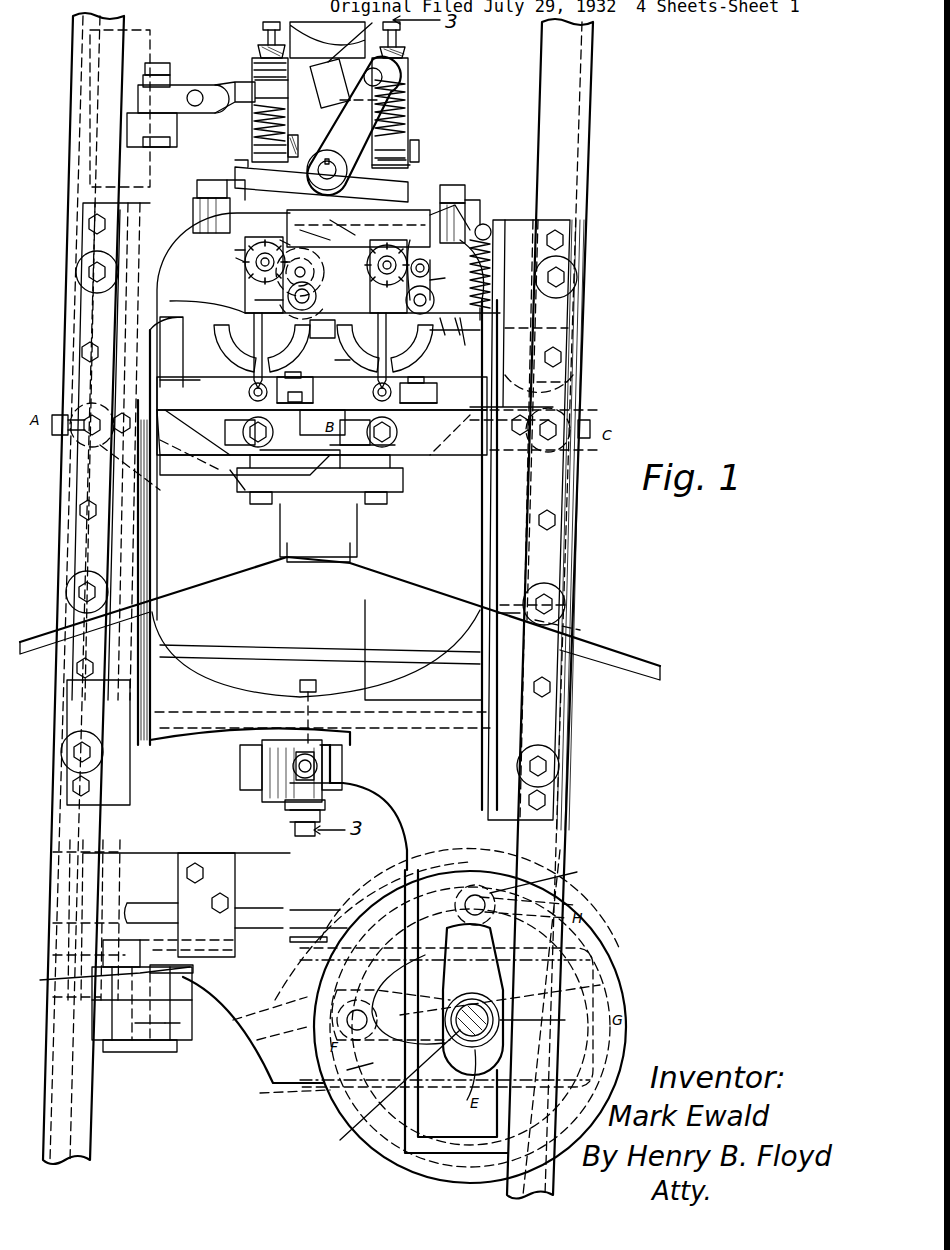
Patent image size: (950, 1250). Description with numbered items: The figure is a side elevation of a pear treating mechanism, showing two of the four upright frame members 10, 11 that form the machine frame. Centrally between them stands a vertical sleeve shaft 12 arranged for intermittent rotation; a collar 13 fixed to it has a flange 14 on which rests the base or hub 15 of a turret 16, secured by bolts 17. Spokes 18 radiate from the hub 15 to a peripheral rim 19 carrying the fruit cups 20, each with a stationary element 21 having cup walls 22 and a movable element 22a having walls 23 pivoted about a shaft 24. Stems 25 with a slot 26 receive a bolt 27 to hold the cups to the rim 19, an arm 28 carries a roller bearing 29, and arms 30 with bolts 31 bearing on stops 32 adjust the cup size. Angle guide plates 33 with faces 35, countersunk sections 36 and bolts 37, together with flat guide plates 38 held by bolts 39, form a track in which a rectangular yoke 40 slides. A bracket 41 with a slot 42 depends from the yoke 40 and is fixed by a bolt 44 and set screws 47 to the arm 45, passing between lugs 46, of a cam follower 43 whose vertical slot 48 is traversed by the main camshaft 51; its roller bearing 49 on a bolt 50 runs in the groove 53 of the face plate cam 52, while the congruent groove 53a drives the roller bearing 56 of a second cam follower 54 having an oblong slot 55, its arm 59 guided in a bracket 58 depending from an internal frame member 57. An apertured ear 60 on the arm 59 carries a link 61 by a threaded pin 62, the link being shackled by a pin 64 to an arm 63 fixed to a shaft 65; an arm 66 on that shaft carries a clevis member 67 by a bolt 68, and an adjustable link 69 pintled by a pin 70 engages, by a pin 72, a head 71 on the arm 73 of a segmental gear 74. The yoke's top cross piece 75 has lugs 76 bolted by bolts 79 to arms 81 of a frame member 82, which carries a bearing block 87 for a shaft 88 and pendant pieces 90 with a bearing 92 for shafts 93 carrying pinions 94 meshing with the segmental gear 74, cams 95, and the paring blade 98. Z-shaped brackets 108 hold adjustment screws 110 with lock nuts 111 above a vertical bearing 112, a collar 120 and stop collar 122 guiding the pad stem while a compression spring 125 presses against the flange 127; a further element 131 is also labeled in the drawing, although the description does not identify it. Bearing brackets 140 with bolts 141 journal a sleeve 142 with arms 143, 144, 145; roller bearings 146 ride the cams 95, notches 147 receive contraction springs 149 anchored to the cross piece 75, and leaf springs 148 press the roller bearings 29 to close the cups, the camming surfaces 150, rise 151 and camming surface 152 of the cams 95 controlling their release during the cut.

The upright frame member 10 is at (73, 310).
The upright frame member 11 is at (578, 330).
The vertical sleeve shaft 12 is at (350, 555).
The collar 13 is at (357, 535).
The flange 14 is at (400, 490).
The base or hub 15 is at (395, 478).
The turret 16 is at (415, 465).
The bolts 17 is at (390, 498).
The spokes 18 is at (232, 475).
The peripheral rim 19 is at (205, 455).
The fruit cup 20 is at (225, 350).
The stationary element 21 is at (250, 372).
The cup walls 22 is at (215, 335).
The movable element 22a is at (329, 365).
The walls 23 is at (328, 340).
The shaft 24 is at (245, 390).
The stems 25 is at (90, 460).
The slot 26 is at (138, 470).
The bolt 27 is at (75, 450).
The arm 28 is at (252, 408).
The roller bearing 29 is at (245, 428).
The arms 30 is at (305, 395).
The bolts 31 is at (375, 382).
The stops 32 is at (305, 405).
The angle guide plates 33 is at (560, 221).
The faces 35 is at (555, 551).
The countersunk sections 36 is at (558, 580).
The bolts 37 is at (560, 600).
The flat guide plates 38 is at (72, 526).
The bolts 39 is at (80, 511).
The yoke 40 is at (482, 555).
The bracket 41 is at (350, 720).
The slot 42 is at (290, 752).
The cam follower 43 is at (430, 848).
The bolt 44 is at (283, 795).
The arm 45 is at (292, 768).
The lugs 46 is at (290, 805).
The set screws 47 is at (246, 828).
The vertical slot 48 is at (392, 1089).
The roller bearing 49 is at (500, 938).
The bolt 50 is at (485, 905).
The main camshaft 51 is at (350, 1105).
The face plate cam 52 is at (600, 935).
The groove 53 is at (330, 1090).
The groove 53a is at (600, 960).
The cam follower 54 is at (260, 1060).
The oblong slot 55 is at (253, 1030).
The roller bearing 56 is at (270, 1040).
The internal frame member 57 is at (252, 868).
The guide bracket 58 is at (207, 860).
The arm 59 is at (160, 940).
The apertured ear 60 is at (185, 995).
The link 61 is at (158, 1040).
The threaded pin 62 is at (172, 1055).
The arm 63 is at (102, 977).
The pin 64 is at (125, 1055).
The shaft 65 is at (130, 42).
The arm 66 is at (127, 124).
The clevis member 67 is at (178, 95).
The bolt 68 is at (160, 75).
The adjustable link 69 is at (226, 85).
The pin 70 is at (197, 90).
The head 71 is at (350, 62).
The pin 72 is at (340, 38).
The arm 73 is at (335, 132).
The segmental gear 74 is at (250, 172).
The top cross piece 75 is at (484, 222).
The lugs 76 is at (485, 224).
The bolts 79 is at (210, 180).
The arms 81 is at (193, 205).
The frame member 82 is at (464, 205).
The bearing block 87 is at (455, 185).
The shaft 88 is at (240, 180).
The pieces 90 is at (245, 292).
The bearing 92 is at (255, 298).
The shafts 93 is at (262, 280).
The pinions 94 is at (358, 228).
The cams 95 is at (250, 275).
The paring blade 98 is at (305, 242).
The Z-shaped brackets 108 is at (258, 50).
The adjustment screws 110 is at (262, 26).
The lock nuts 111 is at (405, 52).
The vertical bearing 112 is at (412, 165).
The collar 120 is at (420, 148).
The stop collar 122 is at (252, 145).
The compression spring 125 is at (252, 118).
The flange 127 is at (400, 80).
The shaft 131 is at (237, 262).
The bearing brackets 140 is at (245, 306).
The bolts 141 is at (318, 298).
The sleeve 142 is at (430, 286).
The arms 143 is at (430, 318).
The arms 144 is at (430, 272).
The arms 145 is at (448, 352).
The roller bearing 146 is at (322, 272).
The notches 147 is at (476, 332).
The leaf springs 148 is at (245, 385).
The contraction springs 149 is at (488, 240).
The camming surfaces 150 is at (420, 200).
The rise 151 is at (262, 275).
The camming surface 152 is at (245, 252).